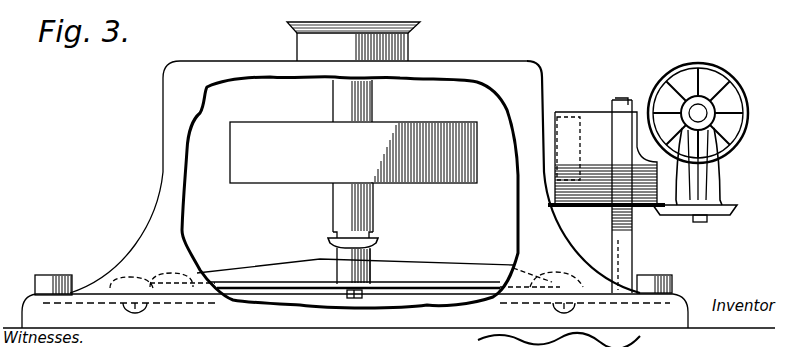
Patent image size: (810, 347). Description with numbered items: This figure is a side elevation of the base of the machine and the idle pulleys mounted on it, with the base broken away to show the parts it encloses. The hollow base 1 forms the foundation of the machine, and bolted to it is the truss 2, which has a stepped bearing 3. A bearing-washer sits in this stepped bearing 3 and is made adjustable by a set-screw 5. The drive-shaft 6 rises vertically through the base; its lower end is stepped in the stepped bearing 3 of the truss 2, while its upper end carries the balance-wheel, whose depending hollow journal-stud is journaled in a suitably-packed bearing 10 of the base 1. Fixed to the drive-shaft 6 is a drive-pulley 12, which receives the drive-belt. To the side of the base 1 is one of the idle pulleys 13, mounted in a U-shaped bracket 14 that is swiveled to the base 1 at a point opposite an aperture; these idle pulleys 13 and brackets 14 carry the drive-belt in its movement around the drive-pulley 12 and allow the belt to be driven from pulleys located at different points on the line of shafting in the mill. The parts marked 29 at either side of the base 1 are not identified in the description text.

The hollow base 1 is at (163, 172).
The truss 2 is at (407, 282).
The stepped bearing 3 is at (333, 241).
The set-screw 5 is at (353, 297).
The drive-shaft 6 is at (371, 207).
The bearing 10 is at (305, 43).
The drive-pulley 12 is at (353, 152).
The idle pulleys 13 is at (662, 80).
The U-shaped brackets 14 is at (703, 184).
The blocks 29 is at (687, 277).